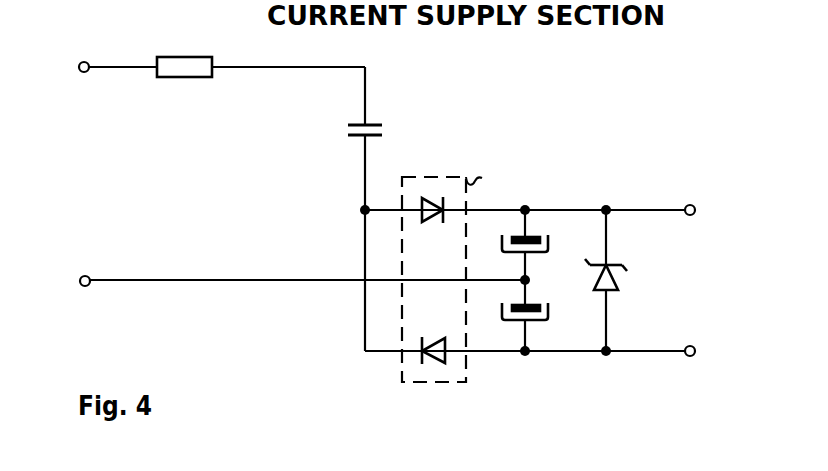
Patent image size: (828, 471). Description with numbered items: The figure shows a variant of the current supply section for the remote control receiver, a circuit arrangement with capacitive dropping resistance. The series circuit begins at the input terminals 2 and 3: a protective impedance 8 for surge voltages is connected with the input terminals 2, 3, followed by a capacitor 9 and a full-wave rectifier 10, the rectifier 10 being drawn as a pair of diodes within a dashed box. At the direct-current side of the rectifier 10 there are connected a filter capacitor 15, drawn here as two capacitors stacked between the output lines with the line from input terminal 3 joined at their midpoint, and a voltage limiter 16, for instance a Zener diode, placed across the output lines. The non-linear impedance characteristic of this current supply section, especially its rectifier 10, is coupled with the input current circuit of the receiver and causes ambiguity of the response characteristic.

The input terminal 2 is at (88, 62).
The input terminal 3 is at (89, 276).
The protective impedance 8 is at (178, 78).
The capacitor 9 is at (353, 137).
The full-wave rectifier 10 is at (445, 176).
The filter capacitor 15 is at (543, 250).
The voltage limiter 16 is at (618, 281).